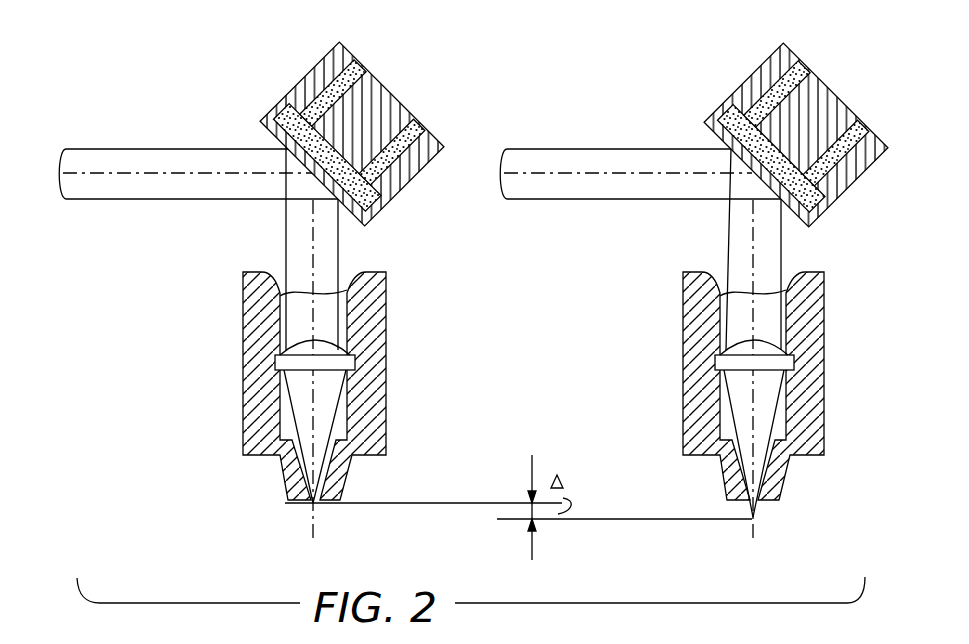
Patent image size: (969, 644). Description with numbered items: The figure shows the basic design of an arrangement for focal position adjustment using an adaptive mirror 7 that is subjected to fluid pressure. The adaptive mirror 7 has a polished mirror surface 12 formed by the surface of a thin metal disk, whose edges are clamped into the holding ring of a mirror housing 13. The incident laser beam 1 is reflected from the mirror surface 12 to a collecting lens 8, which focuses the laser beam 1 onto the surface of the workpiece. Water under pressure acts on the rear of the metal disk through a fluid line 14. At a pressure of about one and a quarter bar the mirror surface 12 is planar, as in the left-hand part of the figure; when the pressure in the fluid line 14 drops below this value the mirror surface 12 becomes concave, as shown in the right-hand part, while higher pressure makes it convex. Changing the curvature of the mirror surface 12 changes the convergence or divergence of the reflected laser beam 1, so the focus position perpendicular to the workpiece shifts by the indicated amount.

The laser beam 1 is at (162, 188).
The adaptive mirror 7 is at (386, 86).
The collecting lens 8 is at (355, 365).
The mirror surface 12 is at (272, 132).
The mirror housing 13 is at (312, 85).
The fluid line 14 is at (423, 120).